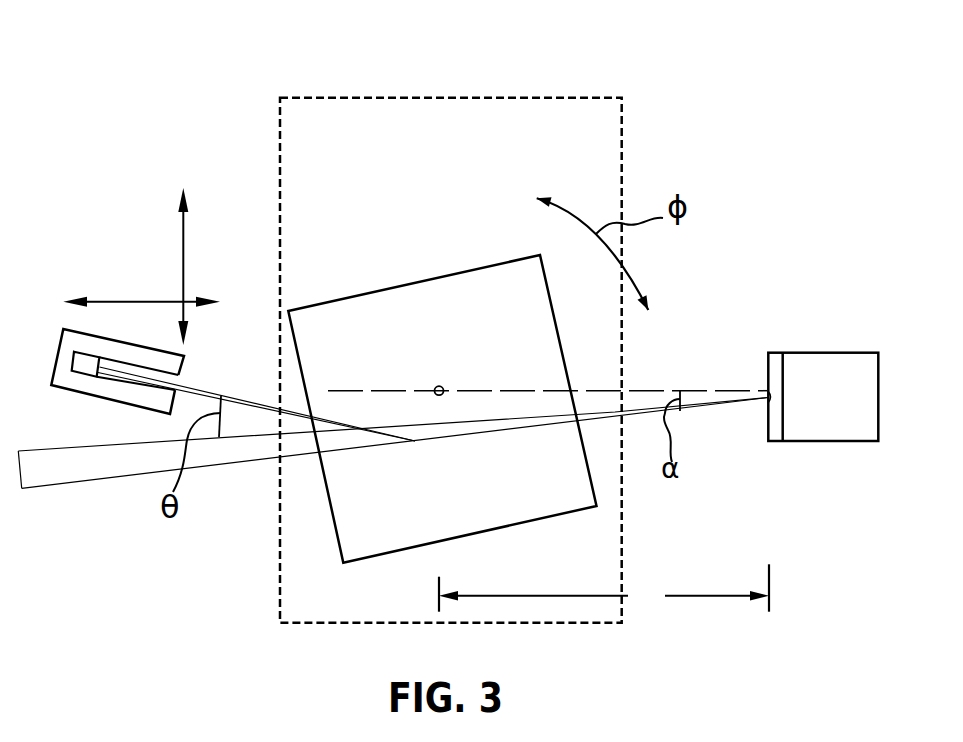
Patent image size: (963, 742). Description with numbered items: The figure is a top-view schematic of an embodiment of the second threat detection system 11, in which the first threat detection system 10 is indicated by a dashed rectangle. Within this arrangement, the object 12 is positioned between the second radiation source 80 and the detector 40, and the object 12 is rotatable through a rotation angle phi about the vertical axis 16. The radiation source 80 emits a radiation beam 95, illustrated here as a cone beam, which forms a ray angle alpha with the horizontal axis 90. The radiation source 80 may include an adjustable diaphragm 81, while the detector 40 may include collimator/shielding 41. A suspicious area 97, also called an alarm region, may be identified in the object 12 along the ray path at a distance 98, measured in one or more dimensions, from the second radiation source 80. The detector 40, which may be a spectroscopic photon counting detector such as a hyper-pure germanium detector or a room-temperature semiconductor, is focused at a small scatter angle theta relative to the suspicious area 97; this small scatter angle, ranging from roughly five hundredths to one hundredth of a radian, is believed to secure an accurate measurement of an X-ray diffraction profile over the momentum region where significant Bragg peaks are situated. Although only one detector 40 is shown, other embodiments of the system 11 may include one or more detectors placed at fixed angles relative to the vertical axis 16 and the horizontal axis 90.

The first threat detection system 10 is at (462, 96).
The second threat detection system 11 is at (695, 103).
The object 12 is at (435, 337).
The vertical axis 16 is at (452, 373).
The detector 40 is at (82, 362).
The collimator/shielding 41 is at (97, 392).
The second radiation source 80 is at (850, 409).
The adjustable diaphragm 81 is at (768, 357).
The horizontal axis 90 is at (660, 390).
The radiation beam 95 is at (718, 408).
The suspicious area 97 is at (419, 459).
The distance 98 is at (604, 587).